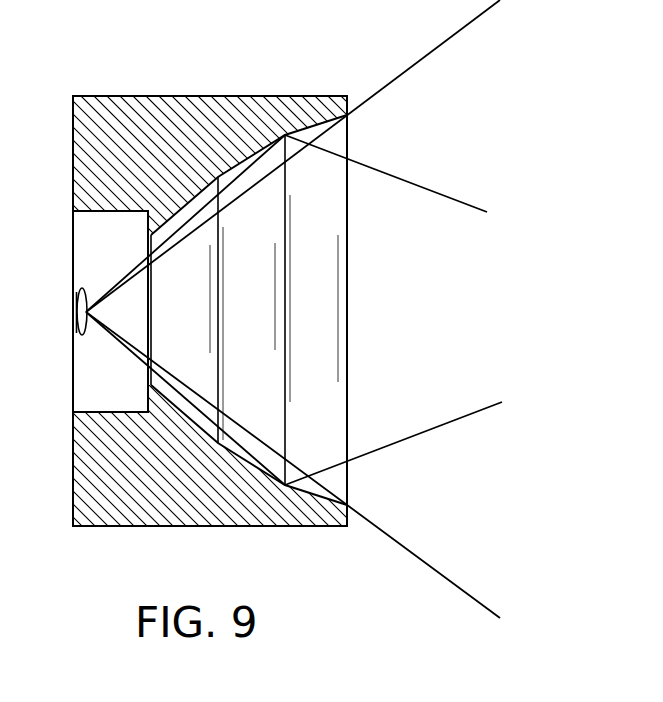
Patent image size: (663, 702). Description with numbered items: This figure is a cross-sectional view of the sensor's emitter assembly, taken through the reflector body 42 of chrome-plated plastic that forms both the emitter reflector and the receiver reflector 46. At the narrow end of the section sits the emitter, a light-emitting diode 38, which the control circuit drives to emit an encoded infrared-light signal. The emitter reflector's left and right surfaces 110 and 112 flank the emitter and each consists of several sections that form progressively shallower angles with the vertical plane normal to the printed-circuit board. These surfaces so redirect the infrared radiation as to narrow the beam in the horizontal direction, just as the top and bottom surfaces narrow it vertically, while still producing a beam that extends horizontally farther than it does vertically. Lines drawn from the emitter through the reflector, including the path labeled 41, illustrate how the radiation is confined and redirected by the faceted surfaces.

The light-emitting diode 38 is at (504, 2).
The light ray 41 is at (492, 610).
The reflector body 42 is at (470, 205).
The receiver reflector 46 is at (492, 403).
The left surface of emitter reflector 110 is at (336, 416).
The right surface of emitter reflector 112 is at (336, 194).